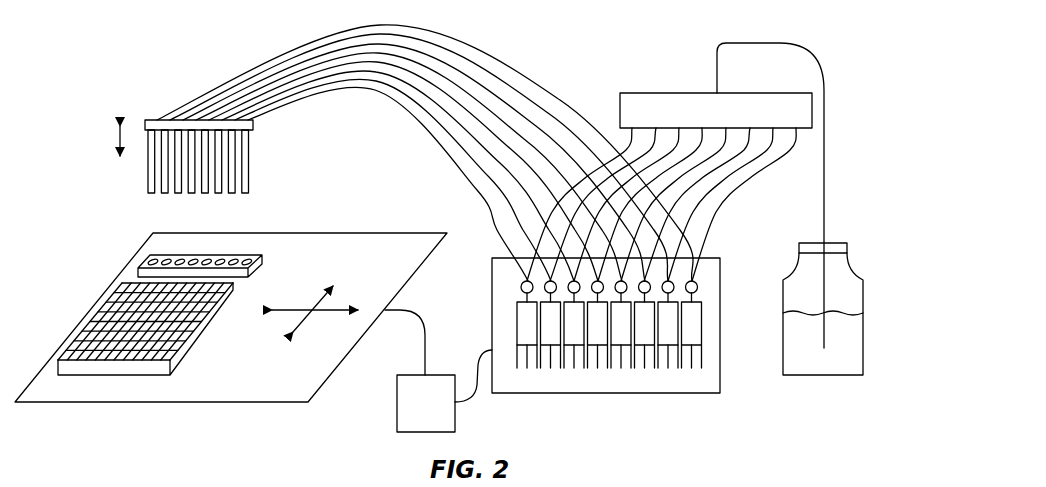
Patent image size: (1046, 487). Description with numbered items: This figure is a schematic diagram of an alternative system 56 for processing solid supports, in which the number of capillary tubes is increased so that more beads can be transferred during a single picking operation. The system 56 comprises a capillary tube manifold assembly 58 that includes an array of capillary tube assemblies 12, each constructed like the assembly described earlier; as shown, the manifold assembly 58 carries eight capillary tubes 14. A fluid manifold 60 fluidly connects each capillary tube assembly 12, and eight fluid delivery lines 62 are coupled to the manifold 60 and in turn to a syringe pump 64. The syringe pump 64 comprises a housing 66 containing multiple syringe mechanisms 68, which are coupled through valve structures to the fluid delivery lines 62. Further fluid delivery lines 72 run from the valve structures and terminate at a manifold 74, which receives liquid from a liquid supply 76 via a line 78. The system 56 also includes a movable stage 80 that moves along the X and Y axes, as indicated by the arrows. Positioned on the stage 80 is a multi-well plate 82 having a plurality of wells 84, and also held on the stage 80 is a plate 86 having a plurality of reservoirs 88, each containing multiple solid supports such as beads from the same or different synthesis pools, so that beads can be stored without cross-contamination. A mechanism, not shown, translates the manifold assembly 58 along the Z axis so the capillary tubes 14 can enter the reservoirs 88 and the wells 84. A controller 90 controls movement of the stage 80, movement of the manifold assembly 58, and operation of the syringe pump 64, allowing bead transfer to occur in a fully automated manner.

The capillary tube assembly 12 is at (160, 182).
The capillary tube 14 is at (246, 182).
The system 56 is at (186, 58).
The capillary tube manifold assembly 58 is at (275, 140).
The fluid manifold 60 is at (152, 118).
The fluid delivery line 62 is at (353, 43).
The syringe pump 64 is at (548, 393).
The housing 66 is at (722, 288).
The syringe mechanism 68 is at (668, 336).
The fluid delivery line 72 is at (729, 187).
The manifold 74 is at (660, 100).
The liquid supply 76 is at (850, 258).
The line 78 is at (808, 55).
The movable stage 80 is at (427, 240).
The multi-well plate 82 is at (215, 318).
The well 84 is at (182, 350).
The plate 86 is at (262, 262).
The reservoir 88 is at (237, 262).
The controller 90 is at (398, 420).